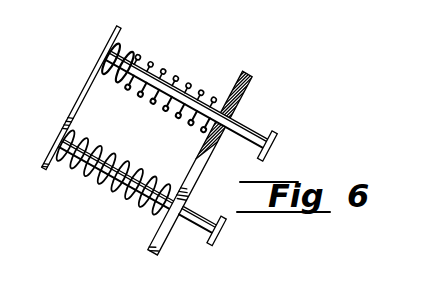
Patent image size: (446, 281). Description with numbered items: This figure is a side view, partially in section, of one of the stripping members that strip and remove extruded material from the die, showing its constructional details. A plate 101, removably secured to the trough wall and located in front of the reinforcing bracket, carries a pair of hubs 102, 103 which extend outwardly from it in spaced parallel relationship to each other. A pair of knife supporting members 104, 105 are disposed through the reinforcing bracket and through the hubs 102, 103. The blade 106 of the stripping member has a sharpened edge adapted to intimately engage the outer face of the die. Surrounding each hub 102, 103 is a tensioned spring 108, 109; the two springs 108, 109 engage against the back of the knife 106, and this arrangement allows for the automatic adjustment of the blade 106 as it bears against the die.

The plate 101 is at (193, 166).
The hub 102 is at (199, 86).
The hub 103 is at (125, 194).
The knife supporting member 104 is at (253, 132).
The knife supporting member 105 is at (199, 217).
The blade 106 is at (80, 98).
The tensioned spring 108 is at (141, 51).
The tensioned spring 109 is at (84, 138).